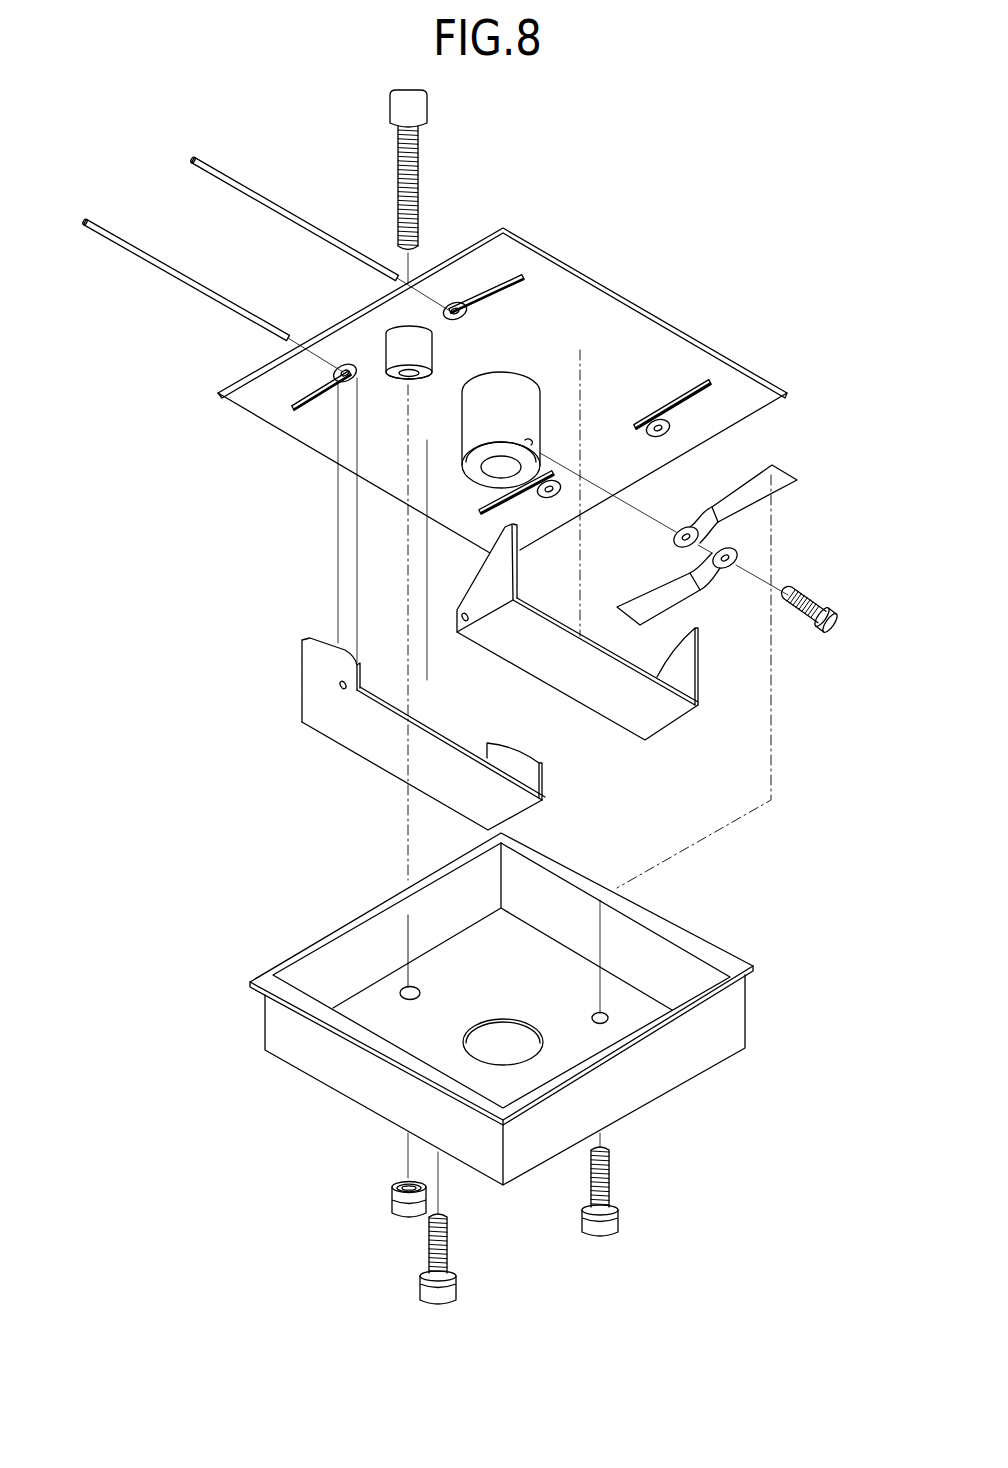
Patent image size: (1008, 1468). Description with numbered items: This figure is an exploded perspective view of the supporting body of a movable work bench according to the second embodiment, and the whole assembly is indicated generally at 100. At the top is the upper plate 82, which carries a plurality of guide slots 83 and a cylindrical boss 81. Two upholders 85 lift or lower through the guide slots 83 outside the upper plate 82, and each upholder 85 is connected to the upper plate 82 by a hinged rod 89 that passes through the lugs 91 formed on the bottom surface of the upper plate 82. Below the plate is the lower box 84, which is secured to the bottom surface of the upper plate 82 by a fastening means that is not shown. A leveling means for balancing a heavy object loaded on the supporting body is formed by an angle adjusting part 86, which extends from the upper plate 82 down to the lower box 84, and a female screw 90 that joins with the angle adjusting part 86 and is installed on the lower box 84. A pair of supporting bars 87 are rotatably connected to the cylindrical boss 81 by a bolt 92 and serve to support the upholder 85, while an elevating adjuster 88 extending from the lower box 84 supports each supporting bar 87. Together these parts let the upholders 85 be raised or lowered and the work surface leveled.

The cylindrical boss 81 is at (465, 425).
The upper plate 82 is at (640, 307).
The guide slots 83 is at (528, 290).
The lower box 84 is at (720, 955).
The upholders 85 is at (520, 802).
The angle adjusting part 86 is at (425, 107).
The supporting bars 87 is at (775, 483).
The elevating adjuster 88 is at (456, 1293).
The hinged rod 89 is at (270, 205).
The female screw 90 is at (392, 1198).
The lugs 91 is at (352, 380).
The bolt 92 is at (823, 630).
The assembly 100 is at (750, 298).